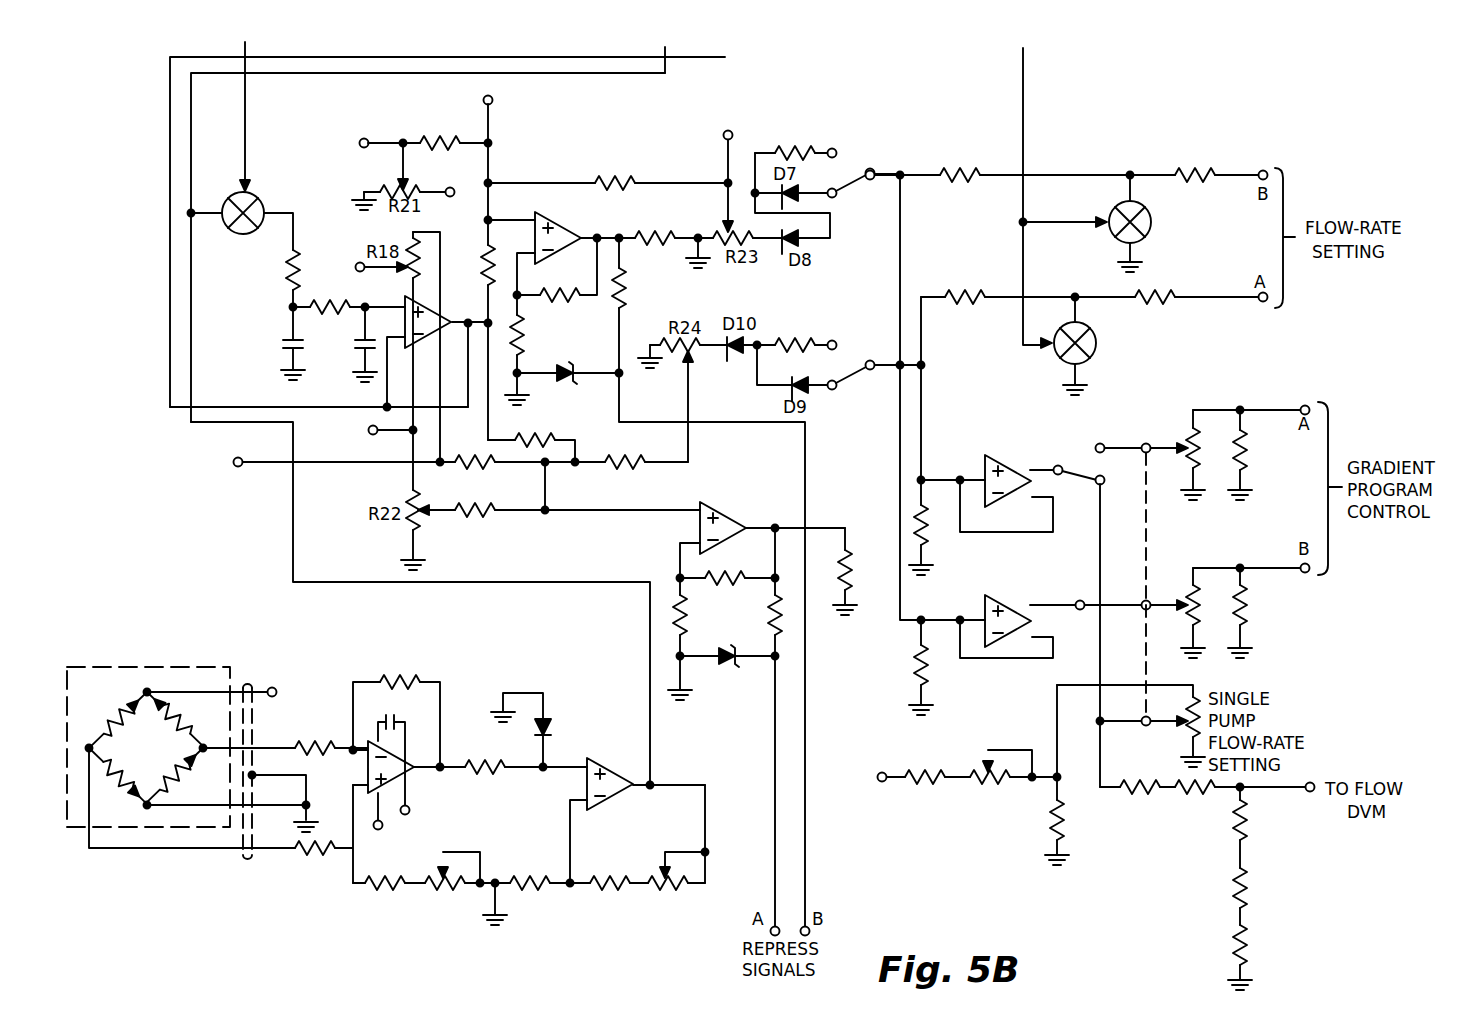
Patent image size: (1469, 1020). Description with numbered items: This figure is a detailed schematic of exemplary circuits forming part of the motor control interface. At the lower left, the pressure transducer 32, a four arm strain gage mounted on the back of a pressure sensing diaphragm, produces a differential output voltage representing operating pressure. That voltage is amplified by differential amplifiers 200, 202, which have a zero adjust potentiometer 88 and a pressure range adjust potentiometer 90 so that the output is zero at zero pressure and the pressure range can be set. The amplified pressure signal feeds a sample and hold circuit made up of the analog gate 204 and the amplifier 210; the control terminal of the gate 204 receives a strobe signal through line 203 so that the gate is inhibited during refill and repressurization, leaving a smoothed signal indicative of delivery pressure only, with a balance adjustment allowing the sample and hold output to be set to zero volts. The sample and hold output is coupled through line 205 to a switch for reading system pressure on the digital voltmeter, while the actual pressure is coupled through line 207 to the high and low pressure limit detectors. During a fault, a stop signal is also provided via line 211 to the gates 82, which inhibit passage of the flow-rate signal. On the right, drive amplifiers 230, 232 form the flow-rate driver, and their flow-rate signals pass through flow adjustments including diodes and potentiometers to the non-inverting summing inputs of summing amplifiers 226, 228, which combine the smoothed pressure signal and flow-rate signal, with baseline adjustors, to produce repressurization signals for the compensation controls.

The pressure transducer 32 is at (190, 668).
The gates 82 is at (1151, 222).
The zero adjust potentiometer 88 is at (443, 892).
The pressure range adjust potentiometer 90 is at (667, 892).
The differential amplifier 200 is at (413, 770).
The differential amplifier 202 is at (622, 800).
The line 203 is at (247, 82).
The analog gate 204 is at (266, 197).
The line 205 is at (725, 57).
The line 207 is at (665, 73).
The amplifier 210 is at (440, 315).
The line 211 is at (1024, 95).
The summing amplifier 226 is at (565, 234).
The summing amplifier 228 is at (730, 523).
The drive amplifier 230 is at (1008, 456).
The drive amplifier 232 is at (1002, 610).